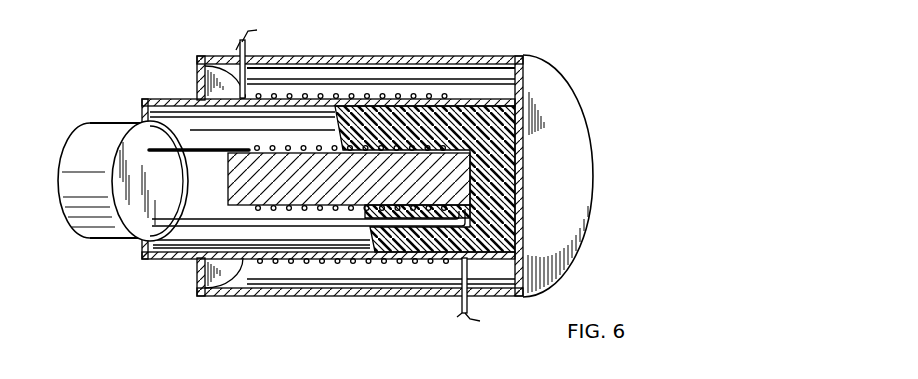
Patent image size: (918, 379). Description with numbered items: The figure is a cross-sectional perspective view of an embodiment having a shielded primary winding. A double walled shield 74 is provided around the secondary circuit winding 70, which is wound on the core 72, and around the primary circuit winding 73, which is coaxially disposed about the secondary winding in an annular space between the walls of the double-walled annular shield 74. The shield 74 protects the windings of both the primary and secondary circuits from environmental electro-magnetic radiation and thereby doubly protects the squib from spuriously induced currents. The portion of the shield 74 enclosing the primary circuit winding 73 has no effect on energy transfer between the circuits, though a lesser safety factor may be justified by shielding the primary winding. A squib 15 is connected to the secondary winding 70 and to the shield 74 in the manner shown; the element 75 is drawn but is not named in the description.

The squib 15 is at (84, 142).
The secondary circuit winding 70 is at (334, 179).
The core 72 is at (237, 184).
The primary circuit winding 73 is at (346, 262).
The double walled shield 74 is at (539, 78).
The disc 75 is at (181, 227).